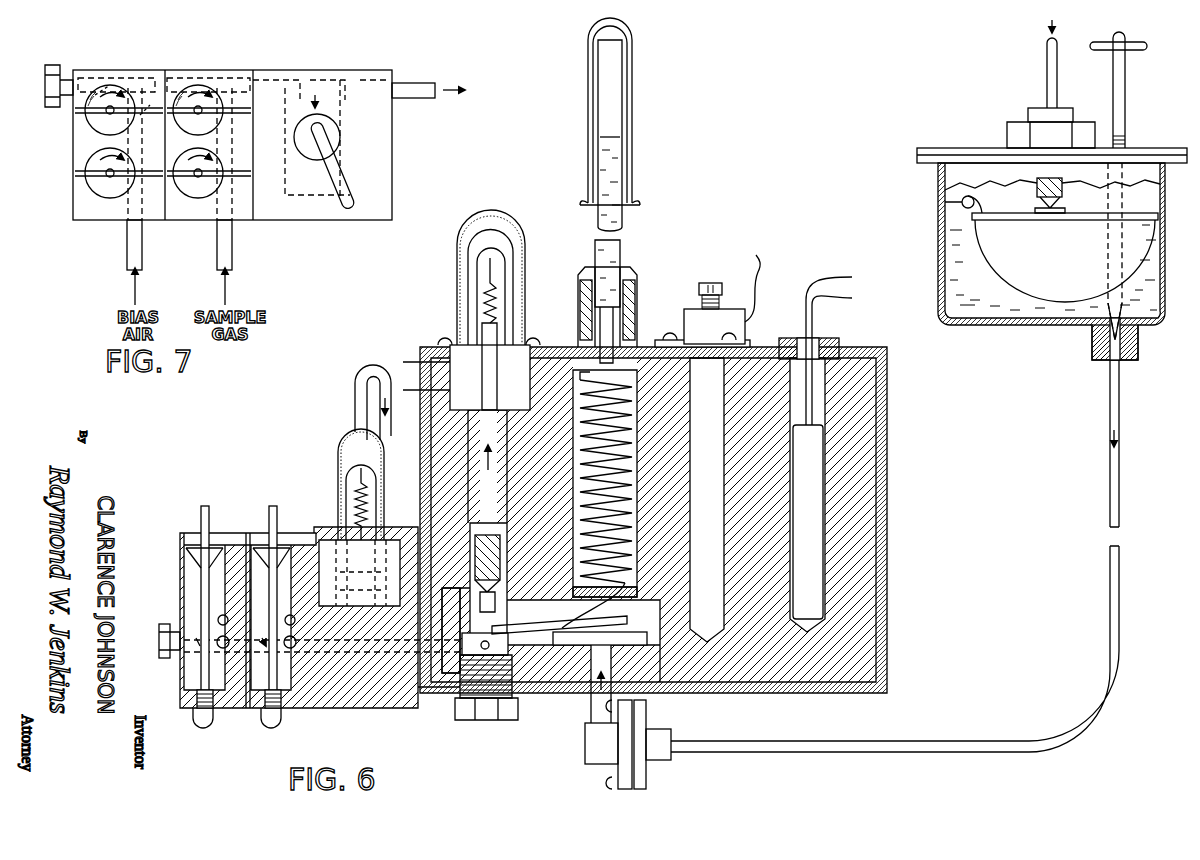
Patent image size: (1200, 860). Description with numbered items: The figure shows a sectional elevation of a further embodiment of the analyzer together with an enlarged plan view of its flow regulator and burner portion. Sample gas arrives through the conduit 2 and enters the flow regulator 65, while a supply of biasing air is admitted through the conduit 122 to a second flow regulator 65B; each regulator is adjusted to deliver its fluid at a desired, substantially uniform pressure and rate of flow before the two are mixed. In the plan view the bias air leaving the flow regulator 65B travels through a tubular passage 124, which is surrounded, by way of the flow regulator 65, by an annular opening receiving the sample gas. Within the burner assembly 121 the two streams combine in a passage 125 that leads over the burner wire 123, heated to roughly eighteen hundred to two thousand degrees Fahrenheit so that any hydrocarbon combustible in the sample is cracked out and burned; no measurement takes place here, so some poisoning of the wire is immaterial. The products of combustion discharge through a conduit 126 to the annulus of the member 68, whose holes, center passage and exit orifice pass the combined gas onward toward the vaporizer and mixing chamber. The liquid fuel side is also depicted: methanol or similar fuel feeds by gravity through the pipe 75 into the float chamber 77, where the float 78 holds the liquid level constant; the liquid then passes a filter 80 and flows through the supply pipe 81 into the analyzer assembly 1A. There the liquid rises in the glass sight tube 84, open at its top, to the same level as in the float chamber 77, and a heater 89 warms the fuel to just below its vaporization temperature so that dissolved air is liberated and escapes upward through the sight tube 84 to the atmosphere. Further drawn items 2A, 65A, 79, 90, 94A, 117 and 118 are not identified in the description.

In FIG. 6, the analyzer assembly 1A is at (882, 512).
In FIG. 6, the heated block body 2A is at (870, 548).
In FIG. 7, the conduit 2 is at (233, 250).
In FIG. 7, the flow regulator 65 is at (170, 222).
In FIG. 6, the flow regulator 65 is at (296, 708).
In FIG. 6, the valve block section 65A is at (226, 708).
In FIG. 7, the flow regulator 65B is at (90, 222).
In FIG. 6, the member 68 is at (514, 706).
In FIG. 6, the pipe 75 is at (1046, 65).
In FIG. 6, the float chamber 77 is at (937, 250).
In FIG. 6, the float 78 is at (1051, 240).
In FIG. 6, the needle valve 79 is at (1126, 105).
In FIG. 6, the filter 80 is at (648, 775).
In FIG. 6, the supply pipe 81 is at (1109, 393).
In FIG. 6, the glass sight tube 84 is at (625, 257).
In FIG. 6, the heater 89 is at (815, 454).
In FIG. 6, the terminal cavity 90 is at (707, 448).
In FIG. 6, the detector tube 94A is at (473, 302).
In FIG. 7, the valve 117 is at (76, 173).
In FIG. 6, the valve 117 is at (296, 535).
In FIG. 7, the valve 118 is at (76, 110).
In FIG. 6, the valve 118 is at (183, 533).
In FIG. 7, the burner assembly 121 is at (278, 222).
In FIG. 6, the burner assembly 121 is at (362, 708).
In FIG. 7, the conduit 122 is at (125, 258).
In FIG. 6, the burner wire 123 is at (348, 492).
In FIG. 7, the tubular passage 124 is at (83, 78).
In FIG. 7, the passage 125 is at (292, 80).
In FIG. 7, the conduit 126 is at (405, 83).
In FIG. 6, the conduit 126 is at (366, 368).